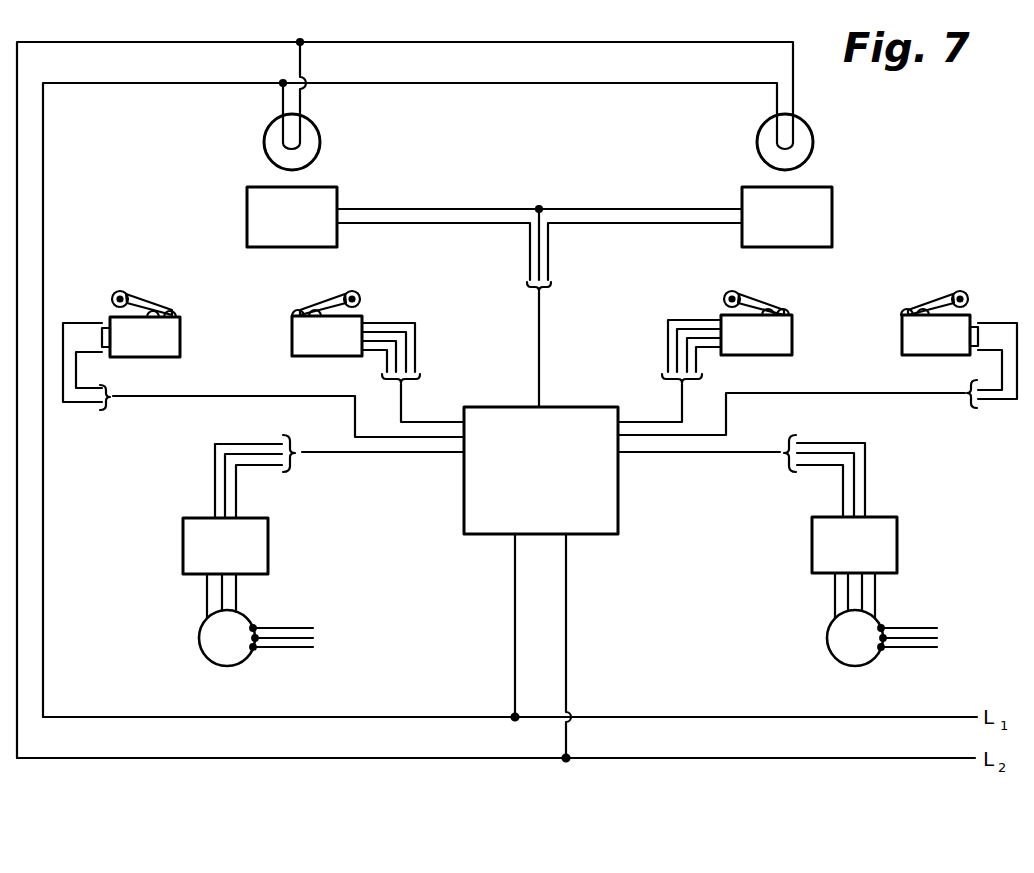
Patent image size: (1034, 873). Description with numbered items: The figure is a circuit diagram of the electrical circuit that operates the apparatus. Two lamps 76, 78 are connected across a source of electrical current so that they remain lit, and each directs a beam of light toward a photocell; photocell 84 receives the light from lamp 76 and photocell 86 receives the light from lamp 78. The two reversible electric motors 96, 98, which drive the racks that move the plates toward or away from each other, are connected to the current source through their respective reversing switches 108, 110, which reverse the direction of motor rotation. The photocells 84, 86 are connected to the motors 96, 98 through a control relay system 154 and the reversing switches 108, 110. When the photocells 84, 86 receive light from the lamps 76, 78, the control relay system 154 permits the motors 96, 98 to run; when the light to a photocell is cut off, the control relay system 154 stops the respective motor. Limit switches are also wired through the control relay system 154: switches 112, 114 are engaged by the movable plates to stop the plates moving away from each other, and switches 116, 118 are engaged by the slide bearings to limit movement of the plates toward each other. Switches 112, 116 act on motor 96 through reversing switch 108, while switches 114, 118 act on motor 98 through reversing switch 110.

The lamp 76 is at (313, 137).
The lamp 78 is at (765, 132).
The photocell 84 is at (258, 203).
The photocell 86 is at (753, 198).
The switch 112 is at (173, 337).
The switch 116 is at (303, 335).
The switch 118 is at (780, 340).
The switch 114 is at (917, 335).
The control relay system 154 is at (588, 525).
The reversing switch 108 is at (207, 532).
The reversing switch 110 is at (882, 530).
The reversible electric motor 96 is at (210, 641).
The reversible electric motor 98 is at (845, 648).